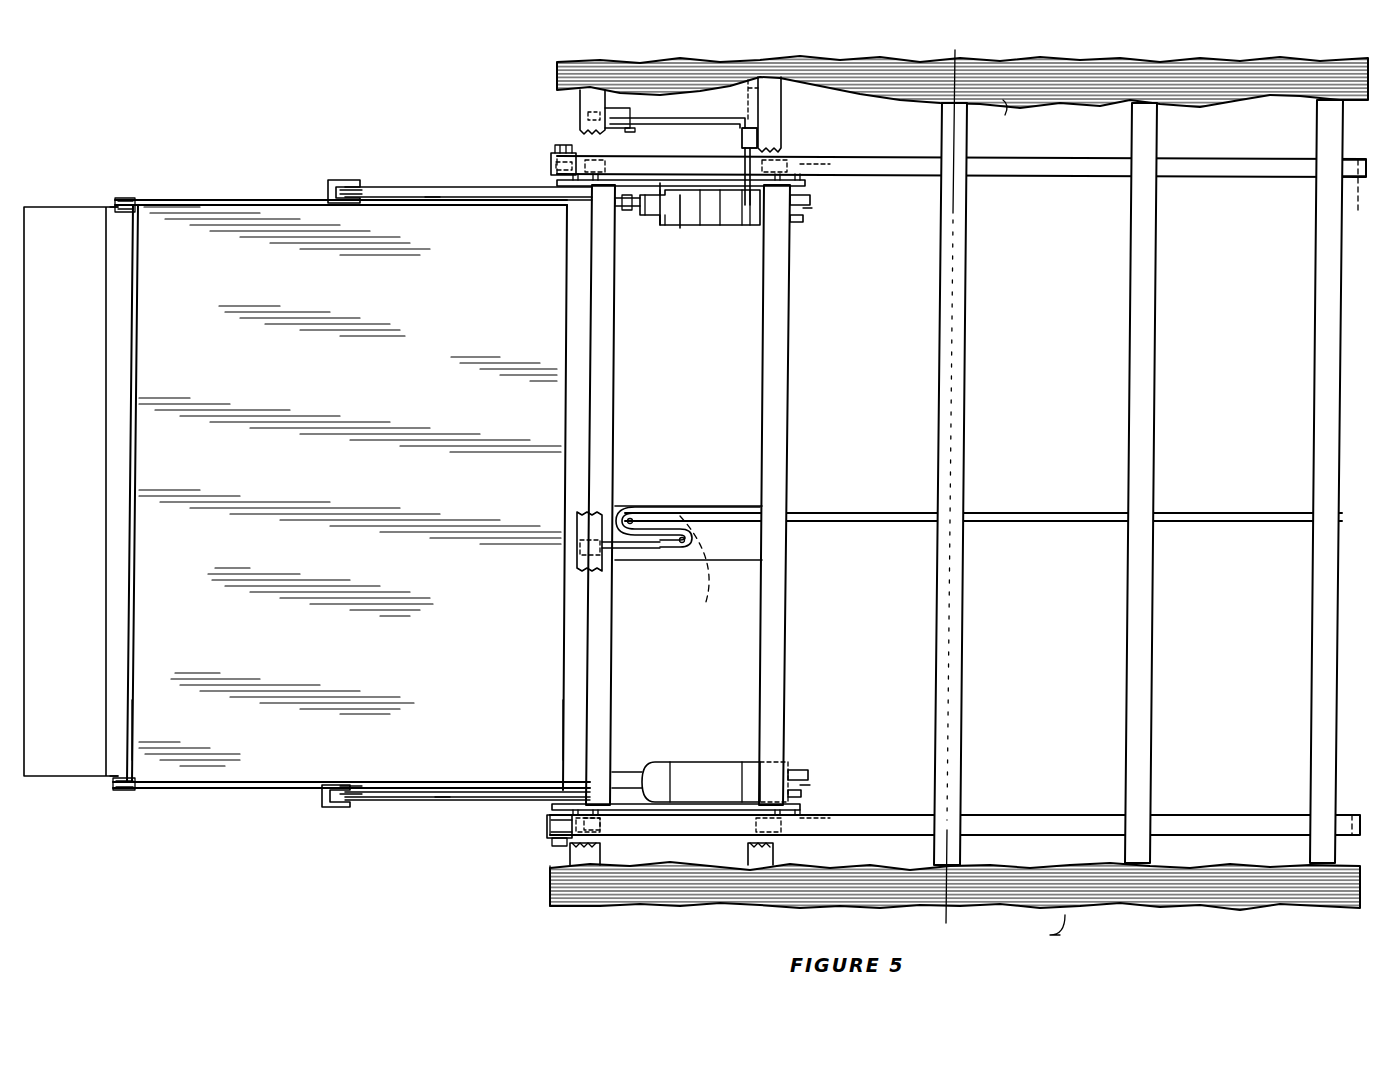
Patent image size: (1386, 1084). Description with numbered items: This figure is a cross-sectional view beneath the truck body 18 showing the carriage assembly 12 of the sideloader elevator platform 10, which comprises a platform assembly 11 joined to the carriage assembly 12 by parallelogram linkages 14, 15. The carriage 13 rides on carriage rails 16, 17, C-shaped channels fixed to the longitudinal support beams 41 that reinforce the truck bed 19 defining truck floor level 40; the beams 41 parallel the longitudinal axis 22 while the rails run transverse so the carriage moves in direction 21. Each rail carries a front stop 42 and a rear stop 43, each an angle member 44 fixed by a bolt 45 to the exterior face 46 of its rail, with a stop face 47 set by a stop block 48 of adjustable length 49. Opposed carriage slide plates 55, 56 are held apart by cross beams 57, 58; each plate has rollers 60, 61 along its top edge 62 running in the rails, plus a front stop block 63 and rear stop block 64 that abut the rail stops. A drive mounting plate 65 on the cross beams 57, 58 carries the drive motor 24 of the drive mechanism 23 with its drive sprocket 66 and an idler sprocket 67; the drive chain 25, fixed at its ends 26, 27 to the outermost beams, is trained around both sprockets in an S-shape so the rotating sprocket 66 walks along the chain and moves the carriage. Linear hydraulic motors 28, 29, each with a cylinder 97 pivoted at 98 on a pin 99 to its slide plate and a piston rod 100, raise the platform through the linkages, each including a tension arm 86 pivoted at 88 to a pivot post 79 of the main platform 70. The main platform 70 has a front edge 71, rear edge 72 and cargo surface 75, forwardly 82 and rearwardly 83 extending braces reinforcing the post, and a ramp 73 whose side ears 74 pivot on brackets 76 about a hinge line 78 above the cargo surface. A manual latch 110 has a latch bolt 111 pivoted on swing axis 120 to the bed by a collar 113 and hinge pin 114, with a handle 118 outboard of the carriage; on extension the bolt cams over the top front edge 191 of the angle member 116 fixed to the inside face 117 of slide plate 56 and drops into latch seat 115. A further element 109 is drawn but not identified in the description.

The sideloader elevator platform 10 is at (335, 878).
The platform assembly 11 is at (312, 128).
The carriage assembly 12 is at (495, 165).
The carriage 13 is at (704, 833).
The parallelogram linkage 14 is at (460, 805).
The parallelogram linkage 15 is at (432, 185).
The carriage rail 16 is at (1050, 806).
The carriage rail 17 is at (1096, 160).
The truck body 18 is at (545, 904).
The truck bed 19 is at (1122, 893).
The direction 21 is at (1048, 565).
The longitudinal axis 22 is at (965, 690).
The drive mechanism 23 is at (720, 484).
The drive motor 24 is at (708, 606).
The drive chain 25 is at (1062, 511).
The end 26 is at (572, 566).
The end 27 is at (1340, 507).
The linear hydraulic motor 28 is at (702, 766).
The linear hydraulic motor 29 is at (738, 230).
The truck floor level 40 is at (1002, 100).
The longitudinal support beam 41 is at (1338, 418).
The front stop 42 is at (551, 136).
The rear stop 43 is at (1352, 812).
The angle member 44 is at (548, 160).
The bolt 45 is at (555, 842).
The exterior face 46 is at (622, 836).
The stop face 47 is at (545, 828).
The stop block 48 is at (552, 172).
The length 49 is at (548, 822).
The carriage slide plate 55 is at (672, 760).
The carriage slide plate 56 is at (720, 230).
The cross beam 57 is at (612, 436).
The cross beam 58 is at (785, 403).
The roller 60 is at (624, 157).
The roller 61 is at (800, 158).
The top edge 62 is at (695, 205).
The front stop block 63 is at (580, 157).
The rear stop block 64 is at (835, 164).
The drive mounting plate 65 is at (755, 540).
The drive sprocket 66 is at (668, 552).
The idler sprocket 67 is at (645, 515).
The main platform 70 is at (263, 790).
The front edge 71 is at (138, 716).
The rear edge 72 is at (565, 718).
The ramp 73 is at (67, 780).
The side ear 74 is at (112, 222).
The cargo surface 75 is at (346, 654).
The bracket 76 is at (143, 198).
The hinge line 78 is at (116, 196).
The pivot post 79 is at (333, 178).
The forwardly extending brace 82 is at (276, 200).
The rearwardly extending brace 83 is at (462, 205).
The tension arm 86 is at (440, 205).
The pivot connection 88 is at (346, 200).
The cylinder 97 is at (752, 230).
The pivot connection 98 is at (808, 218).
The pin 99 is at (806, 225).
The piston rod 100 is at (580, 222).
The hydraulic line 109 is at (650, 118).
The manual latch 110 is at (640, 258).
The latch bolt 111 is at (716, 226).
The collar 113 is at (760, 138).
The hinge pin 114 is at (742, 140).
The latch seat 115 is at (648, 218).
The angle member 116 is at (625, 215).
The inside face 117 is at (648, 185).
The handle 118 is at (580, 97).
The swing axis 120 is at (830, 86).
The top front edge 191 is at (598, 235).